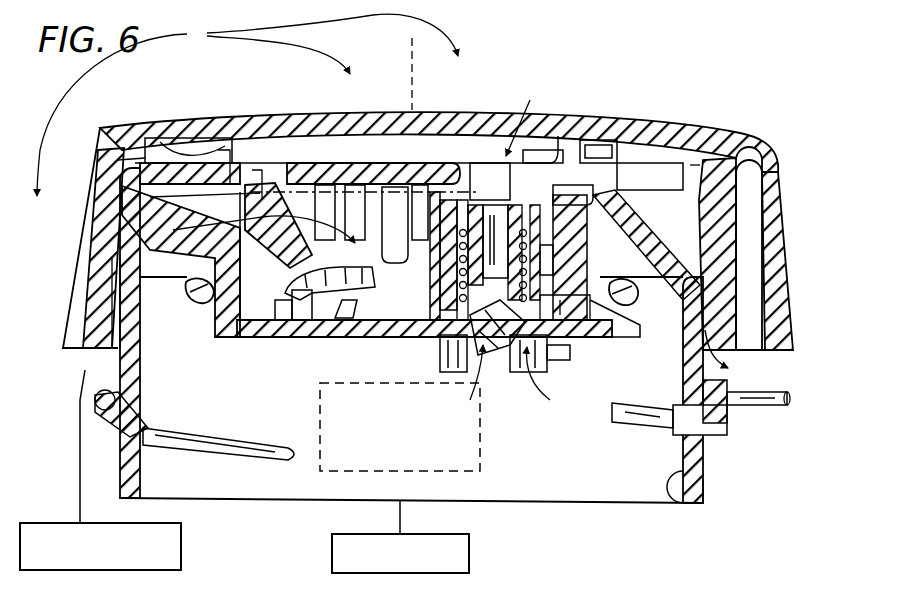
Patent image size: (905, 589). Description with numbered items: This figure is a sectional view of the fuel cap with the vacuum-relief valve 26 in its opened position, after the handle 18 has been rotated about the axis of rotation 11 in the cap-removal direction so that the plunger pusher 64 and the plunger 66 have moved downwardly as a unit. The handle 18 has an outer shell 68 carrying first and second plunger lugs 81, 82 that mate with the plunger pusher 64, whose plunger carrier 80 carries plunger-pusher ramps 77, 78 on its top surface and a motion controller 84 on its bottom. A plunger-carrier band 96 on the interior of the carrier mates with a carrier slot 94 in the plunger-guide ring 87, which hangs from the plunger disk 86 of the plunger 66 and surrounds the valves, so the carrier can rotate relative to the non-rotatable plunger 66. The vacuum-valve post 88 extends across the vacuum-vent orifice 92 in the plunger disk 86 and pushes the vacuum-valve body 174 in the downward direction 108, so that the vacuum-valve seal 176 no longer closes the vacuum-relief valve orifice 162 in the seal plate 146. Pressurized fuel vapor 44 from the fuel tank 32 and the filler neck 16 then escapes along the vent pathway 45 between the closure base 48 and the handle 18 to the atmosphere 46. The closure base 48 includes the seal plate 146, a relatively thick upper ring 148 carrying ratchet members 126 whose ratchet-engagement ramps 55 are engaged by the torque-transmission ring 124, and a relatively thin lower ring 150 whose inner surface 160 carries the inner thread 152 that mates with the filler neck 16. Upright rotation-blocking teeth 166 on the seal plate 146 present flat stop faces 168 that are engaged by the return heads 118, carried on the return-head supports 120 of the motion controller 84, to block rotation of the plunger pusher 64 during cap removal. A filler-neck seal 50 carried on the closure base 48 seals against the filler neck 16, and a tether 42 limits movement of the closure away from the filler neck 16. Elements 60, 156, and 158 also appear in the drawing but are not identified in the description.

The axis of rotation 11 is at (405, 80).
The filler neck 16 is at (400, 521).
The handle 18 is at (728, 133).
The vacuum-relief valve 26 is at (485, 378).
The fuel tank 32 is at (470, 554).
The tether 42 is at (760, 407).
The pressurized fuel vapor 44 is at (97, 372).
The vent pathway 45 is at (548, 422).
The atmosphere 46 is at (182, 547).
The closure base 48 is at (708, 496).
The filler-neck seal 50 is at (188, 292).
The ratchet-engagement ramp 55 is at (698, 162).
The retaining ring 60 is at (632, 300).
The plunger pusher 64 is at (95, 255).
The plunger 66 is at (247, 105).
The outer shell 68 is at (125, 155).
The first plunger-pusher ramp 77 is at (221, 150).
The second plunger-pusher ramp 78 is at (602, 138).
The plunger carrier 80 is at (150, 197).
The first plunger lug 81 is at (258, 165).
The second plunger lug 82 is at (560, 330).
The motion controller 84 is at (246, 312).
The plunger disk 86 is at (318, 165).
The plunger-guide ring 87 is at (173, 230).
The vacuum-valve post 88 is at (487, 170).
The vacuum-vent orifice 92 is at (458, 270).
The carrier slot 94 is at (340, 252).
The plunger-carrier band 96 is at (298, 210).
The downward direction 108 is at (233, 434).
The return head 118 is at (312, 305).
The return-head support 120 is at (370, 279).
The torque-transmission ring 124 is at (186, 145).
The ratchet member 126 is at (648, 185).
The seal plate 146 is at (612, 326).
The upper ring 148 is at (632, 205).
The lower ring 150 is at (700, 450).
The inner thread 152 is at (220, 452).
The pressure relief valve 156 is at (430, 262).
The tank interior 158 is at (600, 482).
The inner surface 160 is at (670, 497).
The vacuum-relief valve orifice 162 is at (447, 345).
The rotation-blocking teeth 166 is at (284, 325).
The flat stop face 168 is at (358, 309).
The vacuum-valve body 174 is at (500, 378).
The vacuum-valve seal 176 is at (570, 352).